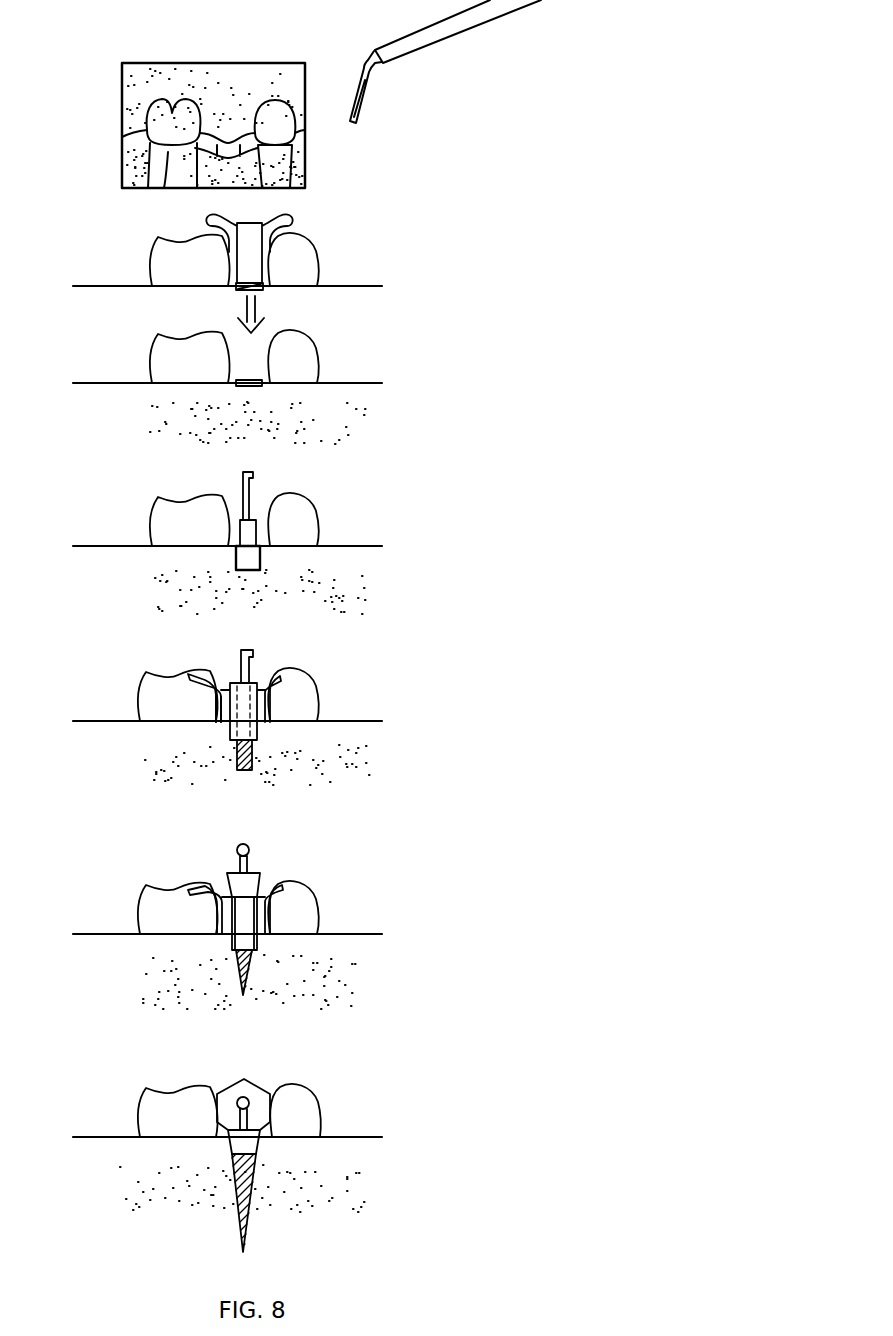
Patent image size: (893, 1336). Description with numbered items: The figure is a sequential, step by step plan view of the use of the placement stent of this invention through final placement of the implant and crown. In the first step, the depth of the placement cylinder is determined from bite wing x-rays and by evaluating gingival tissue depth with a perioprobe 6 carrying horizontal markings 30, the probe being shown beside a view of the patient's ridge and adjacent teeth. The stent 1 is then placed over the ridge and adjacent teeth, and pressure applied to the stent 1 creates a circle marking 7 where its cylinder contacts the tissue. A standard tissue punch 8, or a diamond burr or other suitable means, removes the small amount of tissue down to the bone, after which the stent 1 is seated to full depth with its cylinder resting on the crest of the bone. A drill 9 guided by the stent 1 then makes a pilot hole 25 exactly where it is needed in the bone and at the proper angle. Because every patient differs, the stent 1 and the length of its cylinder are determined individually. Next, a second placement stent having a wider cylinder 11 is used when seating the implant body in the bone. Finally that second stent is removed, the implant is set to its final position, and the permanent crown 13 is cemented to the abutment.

The stent 1 is at (290, 217).
The perioprobe 6 is at (438, 40).
The circle marking 7 is at (252, 380).
The tissue punch 8 is at (248, 492).
The drill 9 is at (247, 680).
The wider cylinder 11 is at (268, 923).
The permanent crown 13 is at (250, 1084).
The pilot hole 25 is at (232, 725).
The horizontal markings 30 is at (368, 97).